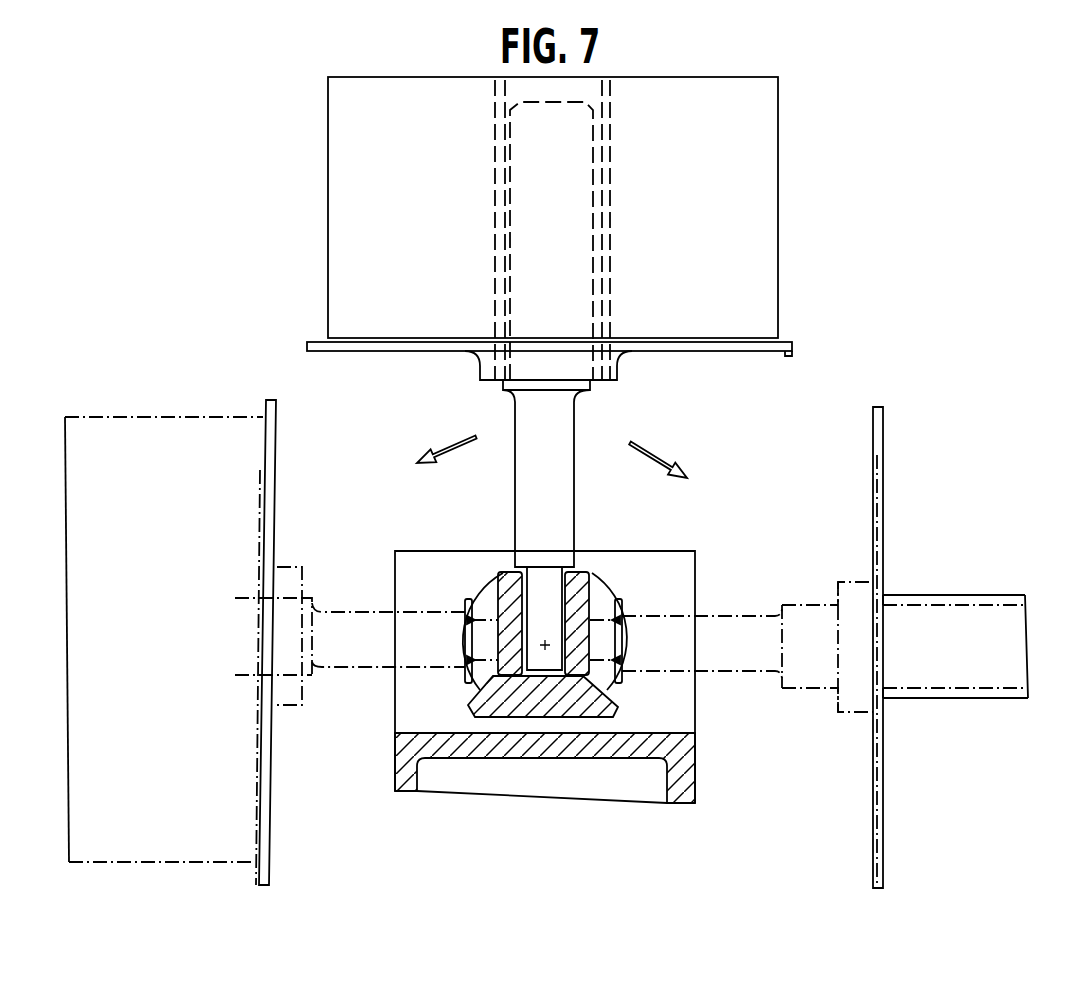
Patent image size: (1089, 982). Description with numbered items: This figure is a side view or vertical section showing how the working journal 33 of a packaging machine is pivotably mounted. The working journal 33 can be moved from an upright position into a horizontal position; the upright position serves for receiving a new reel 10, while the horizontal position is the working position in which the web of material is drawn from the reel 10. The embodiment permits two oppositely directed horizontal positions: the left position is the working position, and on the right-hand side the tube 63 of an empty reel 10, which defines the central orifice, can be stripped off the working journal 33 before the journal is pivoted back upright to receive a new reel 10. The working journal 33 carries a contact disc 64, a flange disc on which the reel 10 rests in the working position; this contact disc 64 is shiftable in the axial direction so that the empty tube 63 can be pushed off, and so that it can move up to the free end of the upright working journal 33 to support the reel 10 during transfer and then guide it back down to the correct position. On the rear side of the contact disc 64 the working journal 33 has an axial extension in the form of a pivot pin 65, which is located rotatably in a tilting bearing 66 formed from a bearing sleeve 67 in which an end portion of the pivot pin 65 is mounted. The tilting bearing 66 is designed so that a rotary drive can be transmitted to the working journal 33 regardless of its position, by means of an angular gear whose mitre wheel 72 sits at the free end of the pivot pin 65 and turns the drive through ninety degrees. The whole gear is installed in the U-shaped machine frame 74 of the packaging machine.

The reel 10 is at (745, 223).
The working journal 33 is at (563, 178).
The tube 63 is at (605, 93).
The contact disc 64 is at (276, 412).
The pivot pin 65 is at (560, 505).
The tilting bearing 66 is at (628, 580).
The bearing sleeve 67 is at (508, 590).
The mitre wheel 72 is at (527, 703).
The machine frame 74 is at (604, 806).